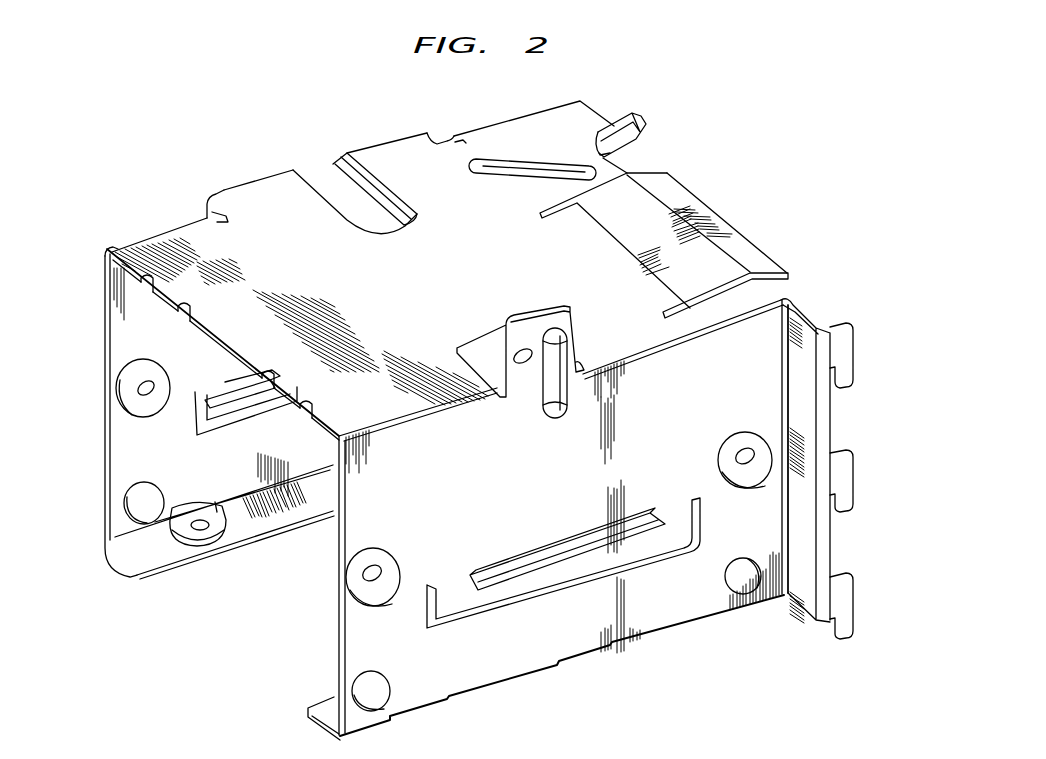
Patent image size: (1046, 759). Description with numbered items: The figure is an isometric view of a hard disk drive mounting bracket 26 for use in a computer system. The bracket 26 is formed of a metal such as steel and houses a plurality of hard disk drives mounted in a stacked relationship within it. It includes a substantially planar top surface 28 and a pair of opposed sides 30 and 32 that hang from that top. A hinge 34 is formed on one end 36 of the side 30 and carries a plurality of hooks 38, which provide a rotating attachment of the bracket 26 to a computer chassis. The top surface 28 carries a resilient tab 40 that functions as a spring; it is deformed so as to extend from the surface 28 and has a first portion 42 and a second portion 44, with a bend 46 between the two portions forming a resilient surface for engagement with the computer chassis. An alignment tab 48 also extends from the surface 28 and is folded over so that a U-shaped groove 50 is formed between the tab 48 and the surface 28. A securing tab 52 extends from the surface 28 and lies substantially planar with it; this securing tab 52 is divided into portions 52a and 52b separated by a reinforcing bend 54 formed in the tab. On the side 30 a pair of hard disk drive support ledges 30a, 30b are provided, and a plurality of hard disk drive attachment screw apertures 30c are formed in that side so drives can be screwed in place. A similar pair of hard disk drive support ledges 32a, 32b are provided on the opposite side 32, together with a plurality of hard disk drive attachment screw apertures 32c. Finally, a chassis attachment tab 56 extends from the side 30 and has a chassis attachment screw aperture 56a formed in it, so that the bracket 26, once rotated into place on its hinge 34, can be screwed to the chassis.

The bracket 26 is at (274, 103).
The top surface 28 is at (190, 225).
The side 30 is at (480, 673).
The hard disk drive support ledge 30a is at (447, 587).
The hard disk drive support ledge 30b is at (322, 706).
The hard disk drive attachment screw aperture 30c is at (377, 568).
The side 32 is at (112, 324).
The hard disk drive support ledge 32a is at (222, 387).
The hard disk drive support ledge 32b is at (138, 560).
The hard disk drive attachment screw aperture 32c is at (149, 392).
The hinge 34 is at (802, 315).
The end 36 is at (784, 380).
The hook 38 is at (852, 367).
The resilient tab 40 is at (718, 214).
The first portion 42 is at (612, 222).
The second portion 44 is at (672, 185).
The bend 46 is at (732, 253).
The alignment tab 48 is at (622, 116).
The U shaped groove 50 is at (596, 145).
The securing tab 52 is at (360, 144).
The portion 52a is at (432, 136).
The portion 52b is at (232, 190).
The reinforcing bend 54 is at (330, 172).
The chassis attachment tab 56 is at (533, 318).
The chassis attachment screw aperture 56a is at (514, 355).